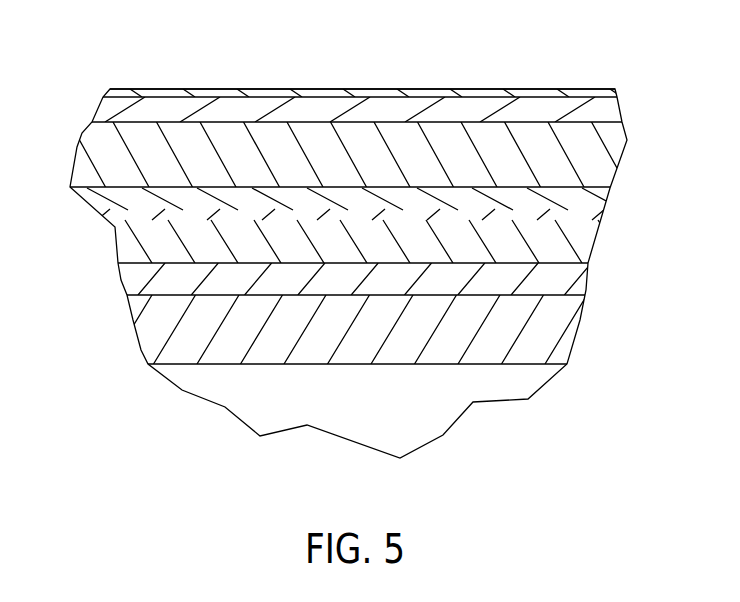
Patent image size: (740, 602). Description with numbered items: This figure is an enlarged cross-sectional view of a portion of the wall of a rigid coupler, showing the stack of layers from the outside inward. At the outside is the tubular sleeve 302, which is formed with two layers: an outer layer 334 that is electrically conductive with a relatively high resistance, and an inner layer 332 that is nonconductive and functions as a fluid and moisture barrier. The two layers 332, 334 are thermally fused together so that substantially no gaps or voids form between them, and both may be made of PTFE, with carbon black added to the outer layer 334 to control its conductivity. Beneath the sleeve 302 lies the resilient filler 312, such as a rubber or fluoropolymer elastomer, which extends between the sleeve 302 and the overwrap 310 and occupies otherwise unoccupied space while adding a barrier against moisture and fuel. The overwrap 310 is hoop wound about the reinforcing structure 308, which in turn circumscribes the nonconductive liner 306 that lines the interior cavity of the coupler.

The tubular sleeve 302 is at (354, 76).
The nonconductive liner 306 is at (565, 338).
The reinforcing structure 308 is at (577, 285).
The overwrap 310 is at (583, 233).
The resilient filler 312 is at (598, 176).
The inner layer 332 is at (104, 106).
The outer layer 334 is at (380, 93).